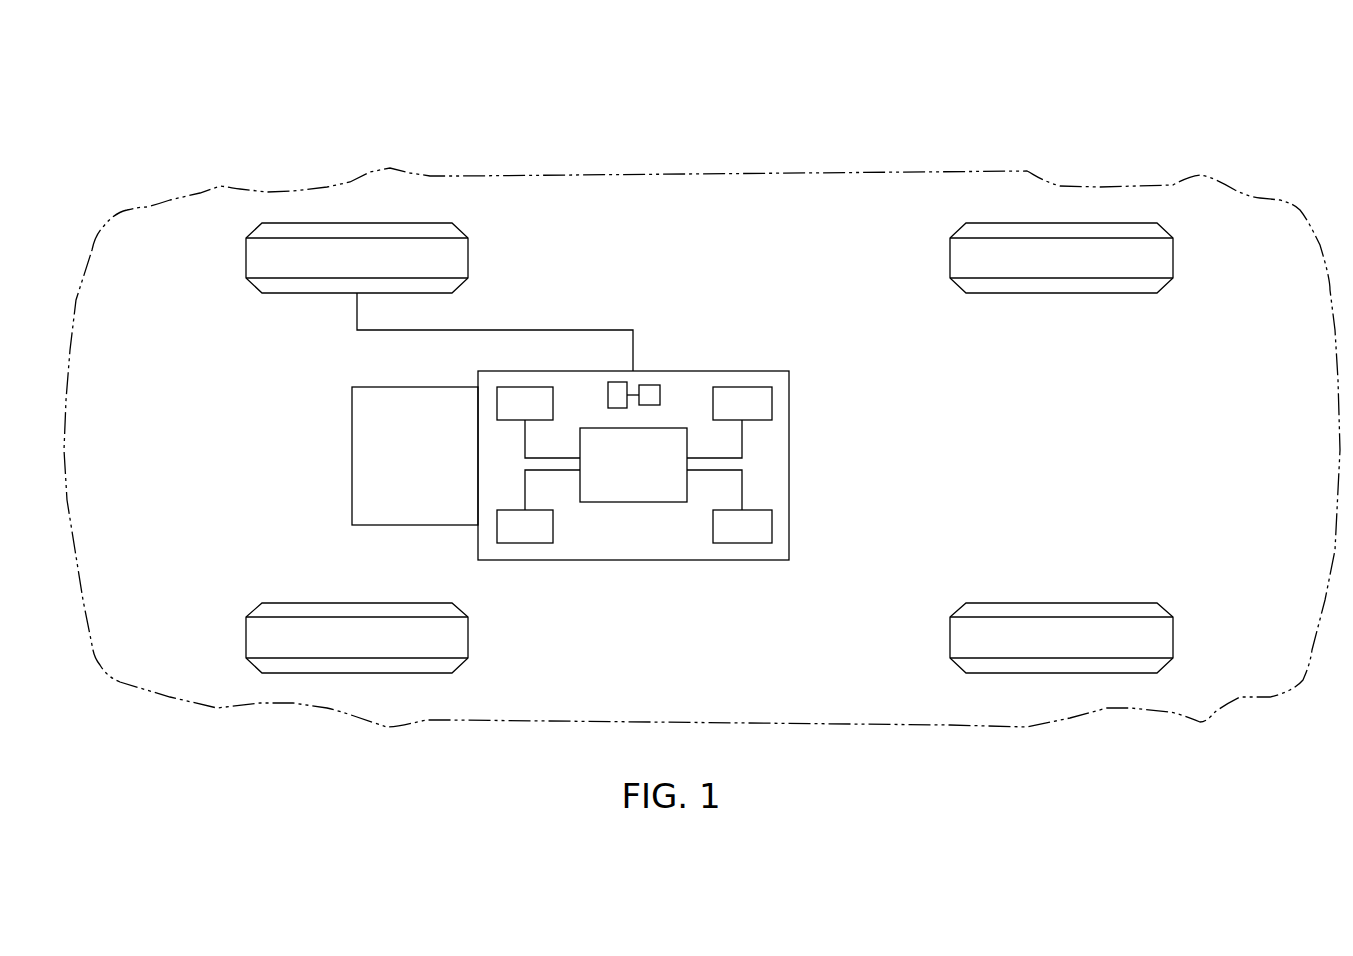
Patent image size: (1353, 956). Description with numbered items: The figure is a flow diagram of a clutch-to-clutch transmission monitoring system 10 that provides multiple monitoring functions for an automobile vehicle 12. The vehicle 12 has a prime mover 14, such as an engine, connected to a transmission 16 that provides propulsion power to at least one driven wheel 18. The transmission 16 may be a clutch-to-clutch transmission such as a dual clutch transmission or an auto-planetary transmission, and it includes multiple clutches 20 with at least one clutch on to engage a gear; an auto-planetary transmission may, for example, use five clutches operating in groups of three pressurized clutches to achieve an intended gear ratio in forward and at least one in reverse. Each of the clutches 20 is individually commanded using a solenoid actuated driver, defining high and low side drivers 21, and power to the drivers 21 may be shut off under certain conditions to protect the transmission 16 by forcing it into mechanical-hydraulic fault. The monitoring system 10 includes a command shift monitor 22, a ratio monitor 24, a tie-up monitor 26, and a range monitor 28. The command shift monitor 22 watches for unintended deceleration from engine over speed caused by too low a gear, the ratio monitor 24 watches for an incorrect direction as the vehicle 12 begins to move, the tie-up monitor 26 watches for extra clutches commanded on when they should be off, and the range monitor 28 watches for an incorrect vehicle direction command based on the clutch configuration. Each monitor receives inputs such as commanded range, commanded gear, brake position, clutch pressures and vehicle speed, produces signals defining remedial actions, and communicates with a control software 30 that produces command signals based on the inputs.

The clutch-to-clutch transmission monitoring system 10 is at (1030, 118).
The automobile vehicle 12 is at (711, 173).
The prime mover 14 is at (352, 455).
The transmission 16 is at (656, 560).
The driven wheel 18 is at (357, 223).
The clutches 20 is at (660, 392).
The high and low side drivers 21 is at (608, 395).
The command shift monitor 22 is at (497, 400).
The ratio monitor 24 is at (497, 530).
The tie-up monitor 26 is at (772, 400).
The range monitor 28 is at (772, 530).
The control software 30 is at (623, 502).